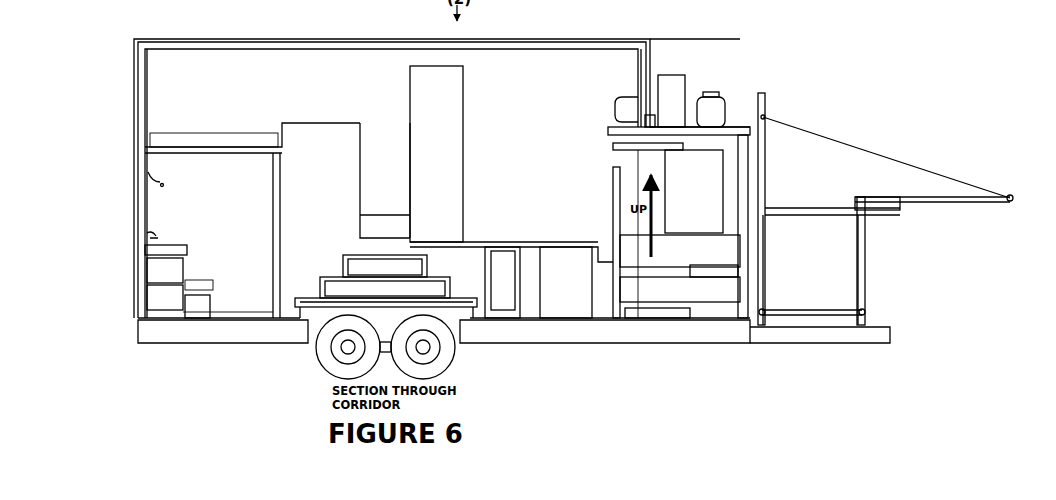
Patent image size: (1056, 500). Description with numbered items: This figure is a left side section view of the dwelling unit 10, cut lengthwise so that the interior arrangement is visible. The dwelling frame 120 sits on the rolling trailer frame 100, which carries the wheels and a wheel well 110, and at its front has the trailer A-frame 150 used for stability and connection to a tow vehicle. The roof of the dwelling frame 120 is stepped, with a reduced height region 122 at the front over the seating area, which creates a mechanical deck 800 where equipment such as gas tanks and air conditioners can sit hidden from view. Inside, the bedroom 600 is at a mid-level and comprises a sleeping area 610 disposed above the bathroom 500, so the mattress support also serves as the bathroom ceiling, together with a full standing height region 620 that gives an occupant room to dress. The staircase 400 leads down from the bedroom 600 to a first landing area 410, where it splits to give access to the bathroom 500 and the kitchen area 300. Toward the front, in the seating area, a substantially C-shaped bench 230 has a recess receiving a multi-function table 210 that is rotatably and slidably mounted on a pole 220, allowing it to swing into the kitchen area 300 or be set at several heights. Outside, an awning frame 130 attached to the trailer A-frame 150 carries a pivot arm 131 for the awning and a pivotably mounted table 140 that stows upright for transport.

The dwelling unit 10 is at (889, 56).
The rolling trailer frame 100 is at (657, 335).
The wheel well 110 is at (300, 306).
The dwelling frame 120 is at (421, 35).
The reduced height region 122 is at (703, 47).
The awning frame 130 is at (816, 161).
The pivot arm 131 is at (950, 197).
The table 140 is at (805, 301).
The trailer A-frame 150 is at (867, 337).
The multi-function table 210 is at (625, 150).
The pole 220 is at (613, 197).
The bench 230 is at (717, 282).
The kitchen area 300 is at (570, 79).
The staircase 400 is at (435, 282).
The first landing area 410 is at (383, 245).
The bathroom 500 is at (225, 251).
The bedroom 600 is at (290, 79).
The sleeping area 610 is at (223, 79).
The full standing height region 620 is at (385, 149).
The mechanical deck 800 is at (729, 121).